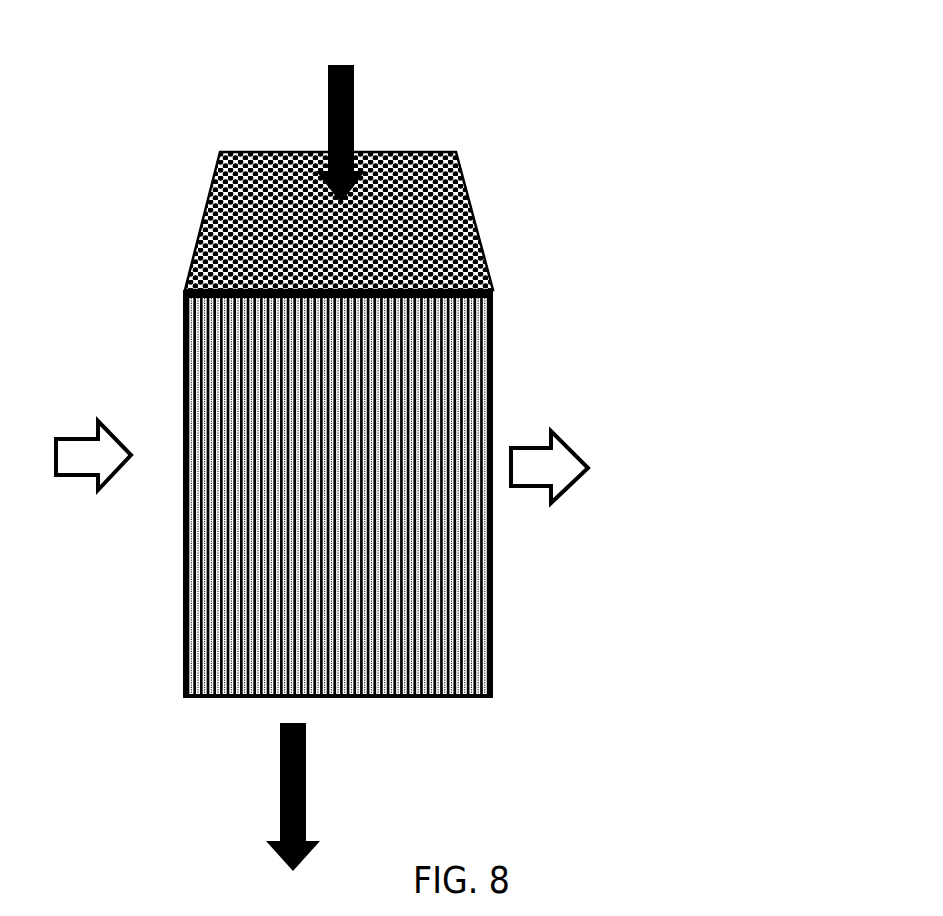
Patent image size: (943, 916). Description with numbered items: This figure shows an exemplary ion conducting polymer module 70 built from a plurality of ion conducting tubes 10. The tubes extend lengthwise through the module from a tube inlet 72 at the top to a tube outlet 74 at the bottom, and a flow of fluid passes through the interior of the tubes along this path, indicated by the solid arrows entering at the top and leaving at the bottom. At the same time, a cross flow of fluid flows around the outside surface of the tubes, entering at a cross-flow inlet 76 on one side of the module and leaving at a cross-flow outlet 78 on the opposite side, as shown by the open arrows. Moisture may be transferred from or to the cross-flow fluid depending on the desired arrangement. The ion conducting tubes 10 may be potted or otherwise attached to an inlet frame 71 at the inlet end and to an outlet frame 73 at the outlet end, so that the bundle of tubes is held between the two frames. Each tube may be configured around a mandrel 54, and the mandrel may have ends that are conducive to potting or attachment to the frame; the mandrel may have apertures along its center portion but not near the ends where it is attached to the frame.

The ion conducting polymer module 70 is at (395, 429).
The inlet frame 71 is at (410, 143).
The tube inlet 72 is at (243, 143).
The ion conducting tube 10 is at (470, 343).
The mandrel 54 is at (470, 392).
The outlet frame 73 is at (355, 688).
The tube outlet 74 is at (412, 688).
The cross-flow inlet 76 is at (175, 520).
The cross-flow outlet 78 is at (470, 517).